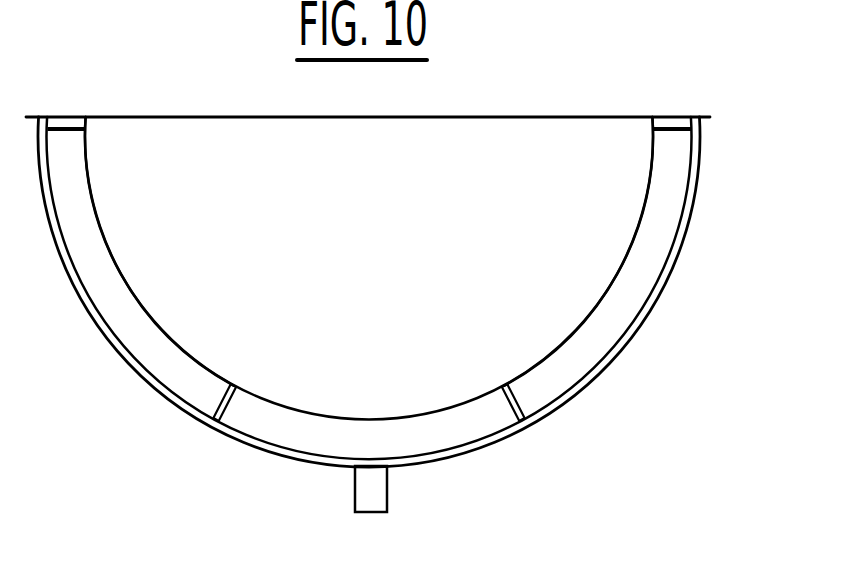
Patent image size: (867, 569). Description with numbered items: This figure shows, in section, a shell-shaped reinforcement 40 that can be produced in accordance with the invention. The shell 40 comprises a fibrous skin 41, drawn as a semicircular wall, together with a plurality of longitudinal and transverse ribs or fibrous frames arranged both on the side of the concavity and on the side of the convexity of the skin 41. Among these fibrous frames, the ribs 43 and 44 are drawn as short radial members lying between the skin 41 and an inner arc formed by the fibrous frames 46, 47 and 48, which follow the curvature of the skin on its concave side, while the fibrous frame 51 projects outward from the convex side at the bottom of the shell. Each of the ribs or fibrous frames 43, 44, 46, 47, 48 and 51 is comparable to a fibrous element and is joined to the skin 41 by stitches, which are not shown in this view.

The shell-shaped reinforcement 40 is at (676, 293).
The fibrous skin 41 is at (107, 333).
The rib or fibrous frame 43 is at (233, 392).
The rib or fibrous frame 44 is at (508, 390).
The rib or fibrous frame 46 is at (133, 310).
The rib or fibrous frame 47 is at (312, 428).
The rib or fibrous frame 48 is at (603, 318).
The rib or fibrous frame 51 is at (387, 495).